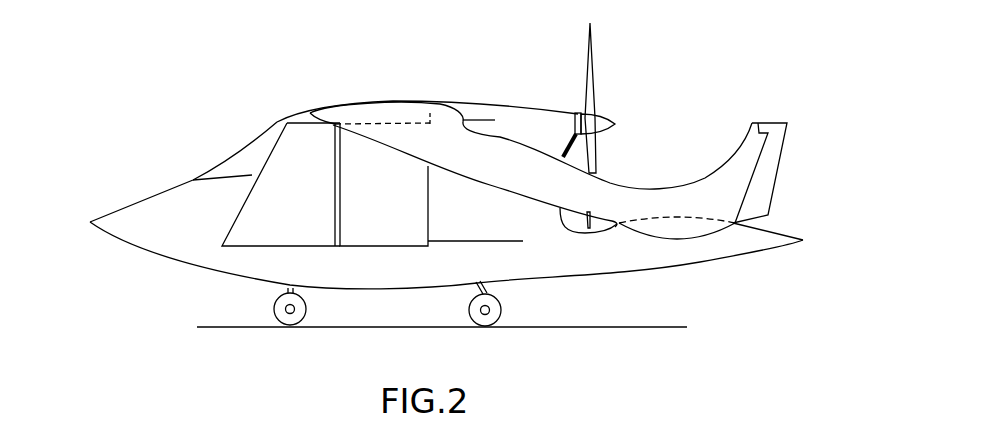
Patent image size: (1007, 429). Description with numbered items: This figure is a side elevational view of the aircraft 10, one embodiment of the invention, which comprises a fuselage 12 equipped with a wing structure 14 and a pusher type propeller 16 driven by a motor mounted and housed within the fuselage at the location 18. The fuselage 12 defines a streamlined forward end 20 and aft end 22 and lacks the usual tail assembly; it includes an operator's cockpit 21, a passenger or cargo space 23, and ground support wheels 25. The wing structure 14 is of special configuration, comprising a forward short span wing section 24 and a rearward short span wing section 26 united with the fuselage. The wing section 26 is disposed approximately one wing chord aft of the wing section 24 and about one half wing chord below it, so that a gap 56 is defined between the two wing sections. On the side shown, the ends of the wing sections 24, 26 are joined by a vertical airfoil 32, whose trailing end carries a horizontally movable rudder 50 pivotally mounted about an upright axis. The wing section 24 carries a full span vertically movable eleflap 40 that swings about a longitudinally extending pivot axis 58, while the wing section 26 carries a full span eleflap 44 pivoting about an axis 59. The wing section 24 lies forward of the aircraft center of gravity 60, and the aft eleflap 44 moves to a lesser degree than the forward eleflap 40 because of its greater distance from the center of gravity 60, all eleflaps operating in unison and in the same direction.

The aircraft 10 is at (673, 72).
The fuselage 12 is at (182, 278).
The wing structure 14 is at (338, 98).
The pusher type propeller 16 is at (600, 67).
The motor location 18 is at (522, 128).
The forward end 20 is at (102, 205).
The operator's cockpit 21 is at (283, 218).
The aft end 22 is at (807, 227).
The passenger or cargo space 23 is at (395, 220).
The forward short span wing section 24 is at (395, 103).
The ground support wheels 25 is at (290, 324).
The aft short span wing section 26 is at (678, 205).
The vertical airfoil 32 is at (517, 182).
The eleflap 40 is at (445, 122).
The eleflap 44 is at (746, 228).
The rudder 50 is at (773, 165).
The gap 56 is at (544, 210).
The pivot axes 58 is at (433, 118).
The pivot axes 59 is at (730, 225).
The center of gravity 60 is at (458, 181).